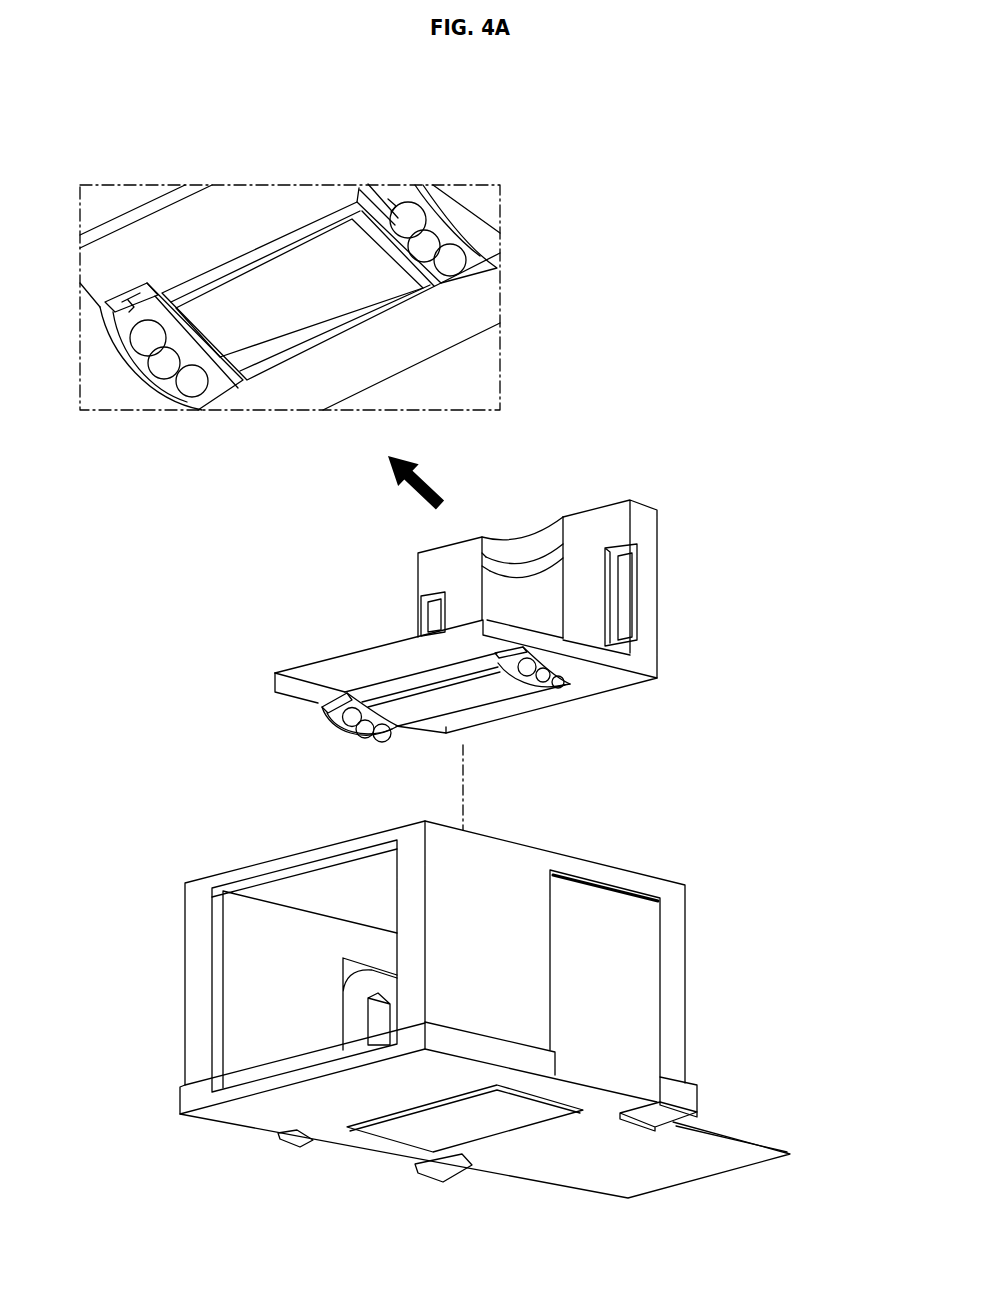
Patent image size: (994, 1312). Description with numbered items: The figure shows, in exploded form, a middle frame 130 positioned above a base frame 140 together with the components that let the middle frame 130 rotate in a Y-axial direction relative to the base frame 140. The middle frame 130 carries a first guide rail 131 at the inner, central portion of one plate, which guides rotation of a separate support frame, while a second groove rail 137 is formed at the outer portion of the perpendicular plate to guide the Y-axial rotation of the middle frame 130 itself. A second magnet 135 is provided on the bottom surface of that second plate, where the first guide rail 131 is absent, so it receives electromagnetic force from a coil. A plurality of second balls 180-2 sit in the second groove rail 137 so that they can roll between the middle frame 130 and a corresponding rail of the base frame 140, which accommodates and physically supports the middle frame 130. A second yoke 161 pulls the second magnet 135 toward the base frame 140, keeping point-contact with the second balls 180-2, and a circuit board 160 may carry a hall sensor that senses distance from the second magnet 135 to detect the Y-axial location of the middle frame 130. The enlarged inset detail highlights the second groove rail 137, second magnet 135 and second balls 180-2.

The middle frame 130 is at (527, 563).
The first guide rail 131 is at (528, 548).
The second magnet 135 is at (290, 327).
The second groove rail 137 is at (380, 203).
The base frame 140 is at (513, 878).
The circuit board 160 is at (637, 952).
The second yoke 161 is at (418, 1132).
The second balls 180-2 is at (432, 243).